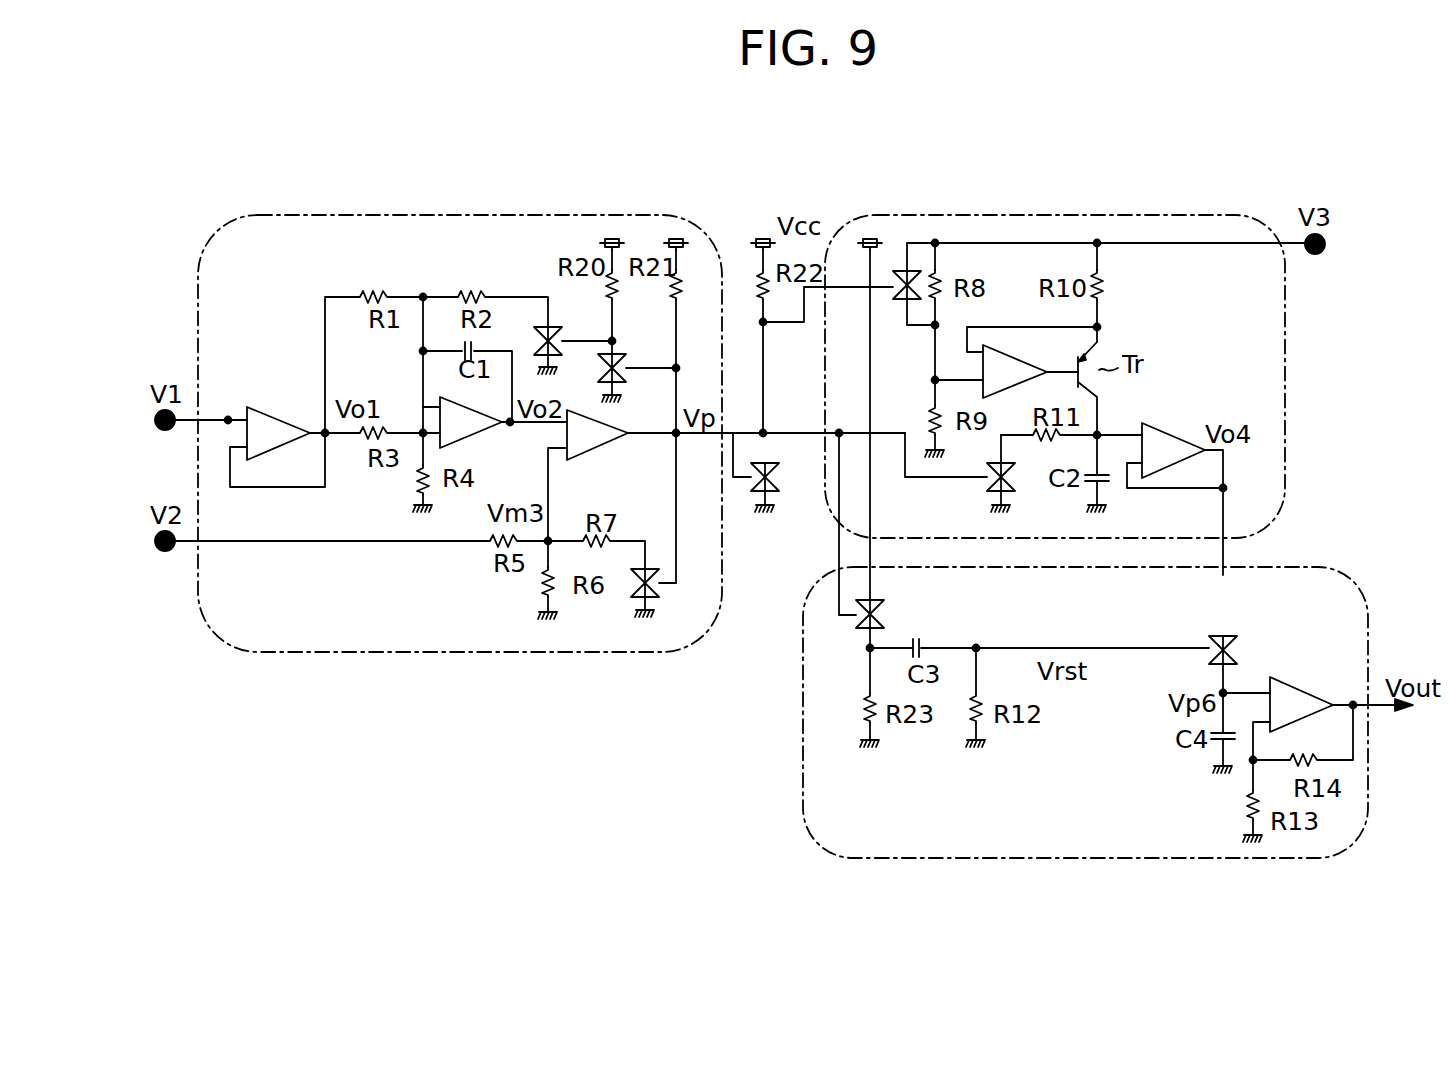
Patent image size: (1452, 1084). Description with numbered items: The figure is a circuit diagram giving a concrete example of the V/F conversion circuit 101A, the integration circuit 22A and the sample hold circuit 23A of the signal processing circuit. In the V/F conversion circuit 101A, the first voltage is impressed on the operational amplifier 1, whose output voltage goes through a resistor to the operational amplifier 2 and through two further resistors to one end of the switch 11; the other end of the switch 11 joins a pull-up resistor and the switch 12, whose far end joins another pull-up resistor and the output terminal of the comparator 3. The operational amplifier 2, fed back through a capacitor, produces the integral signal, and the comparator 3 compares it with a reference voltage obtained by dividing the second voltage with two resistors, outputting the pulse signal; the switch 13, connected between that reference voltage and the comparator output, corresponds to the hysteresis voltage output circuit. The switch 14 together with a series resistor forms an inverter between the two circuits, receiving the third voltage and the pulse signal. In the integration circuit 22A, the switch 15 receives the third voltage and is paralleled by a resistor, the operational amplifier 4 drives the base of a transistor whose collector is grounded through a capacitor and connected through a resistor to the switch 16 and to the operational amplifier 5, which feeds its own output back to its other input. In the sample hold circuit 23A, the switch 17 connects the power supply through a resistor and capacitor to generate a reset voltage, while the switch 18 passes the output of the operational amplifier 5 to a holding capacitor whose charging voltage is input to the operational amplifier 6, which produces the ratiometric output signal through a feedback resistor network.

The operational amplifier 1 is at (265, 408).
The operational amplifier 2 is at (468, 438).
The comparator 3 is at (597, 444).
The operational amplifier 4 is at (1026, 365).
The operational amplifier 5 is at (1168, 428).
The operational amplifier 6 is at (1297, 687).
The switch 11 is at (554, 331).
The switch 12 is at (623, 356).
The switch 13 is at (641, 600).
The switch 14 is at (759, 496).
The switch 15 is at (906, 300).
The switch 16 is at (986, 482).
The switch 17 is at (885, 608).
The switch 18 is at (1208, 660).
The V/F conversion circuit 101A is at (694, 234).
The integration circuit 22A is at (1289, 348).
The sample hold circuit 23A is at (1300, 565).